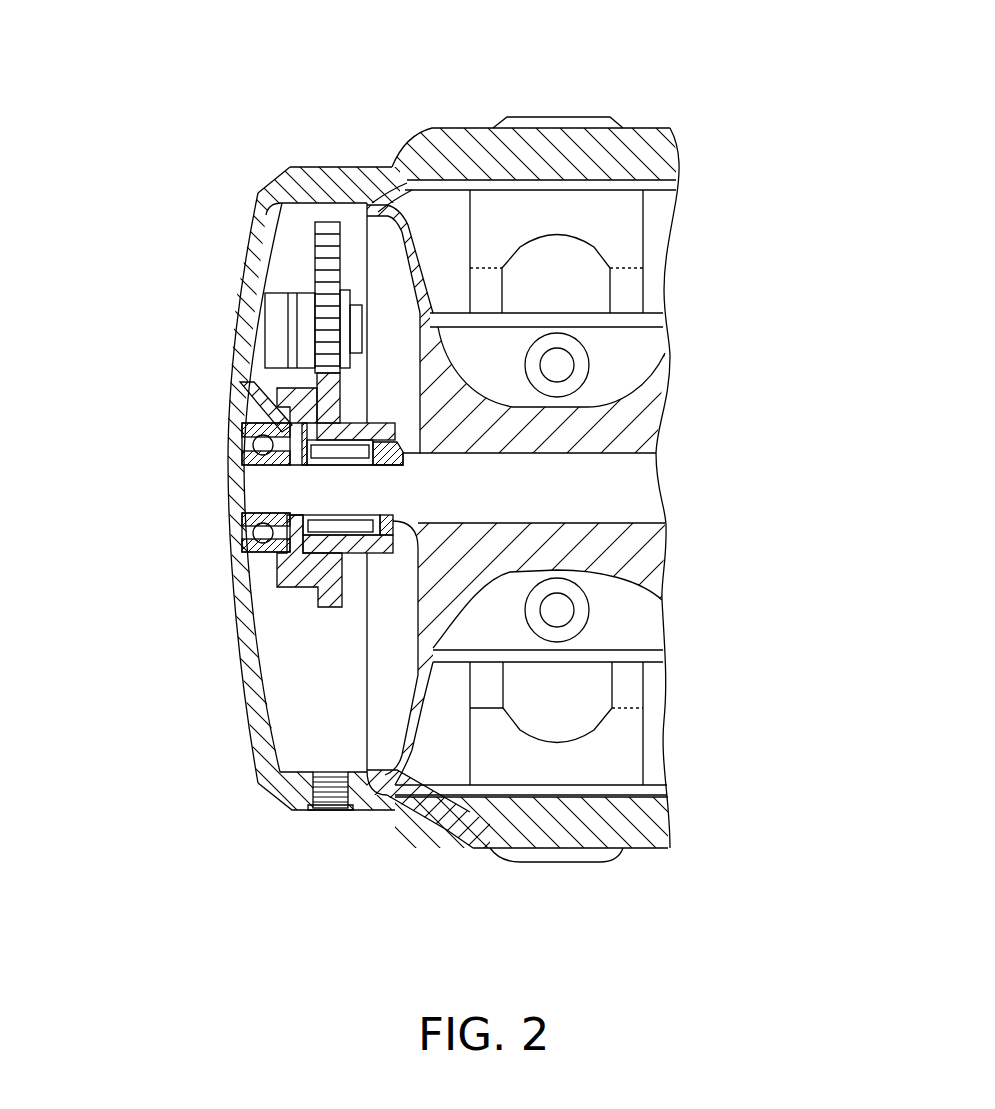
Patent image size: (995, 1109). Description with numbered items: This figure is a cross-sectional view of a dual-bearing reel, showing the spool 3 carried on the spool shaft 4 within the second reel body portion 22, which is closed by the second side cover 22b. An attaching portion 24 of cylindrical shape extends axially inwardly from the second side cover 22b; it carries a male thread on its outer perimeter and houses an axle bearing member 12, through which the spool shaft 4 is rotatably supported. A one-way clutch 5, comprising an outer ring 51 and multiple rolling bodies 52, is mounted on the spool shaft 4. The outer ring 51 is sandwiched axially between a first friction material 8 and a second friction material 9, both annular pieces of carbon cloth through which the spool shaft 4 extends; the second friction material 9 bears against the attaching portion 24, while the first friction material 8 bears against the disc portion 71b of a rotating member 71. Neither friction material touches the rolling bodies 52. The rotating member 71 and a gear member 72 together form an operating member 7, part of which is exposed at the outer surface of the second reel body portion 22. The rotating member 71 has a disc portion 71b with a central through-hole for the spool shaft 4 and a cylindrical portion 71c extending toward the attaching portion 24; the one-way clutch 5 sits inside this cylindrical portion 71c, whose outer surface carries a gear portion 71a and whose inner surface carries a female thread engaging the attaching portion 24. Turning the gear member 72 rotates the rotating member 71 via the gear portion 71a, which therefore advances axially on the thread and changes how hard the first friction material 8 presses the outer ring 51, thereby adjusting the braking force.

The spool 3 is at (512, 547).
The spool shaft 4 is at (458, 513).
The one-way clutch 5 is at (311, 607).
The operating member 7 is at (300, 222).
The first friction material 8 is at (384, 424).
The second friction material 9 is at (345, 408).
The axle bearing member 12 is at (252, 443).
The second reel body portion 22 is at (320, 162).
The second side cover 22b is at (250, 240).
The attaching portion 24 is at (252, 383).
The outer ring 51 is at (305, 545).
The rolling bodies 52 is at (252, 534).
The rotating member 71 is at (330, 612).
The gear portion 71a is at (330, 608).
The disc portion 71b is at (349, 555).
The cylindrical portion 71c is at (318, 690).
The gear member 72 is at (330, 222).